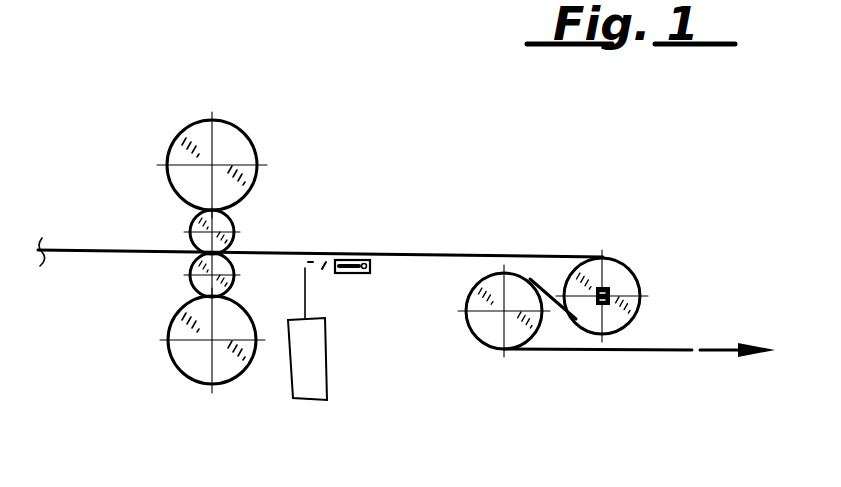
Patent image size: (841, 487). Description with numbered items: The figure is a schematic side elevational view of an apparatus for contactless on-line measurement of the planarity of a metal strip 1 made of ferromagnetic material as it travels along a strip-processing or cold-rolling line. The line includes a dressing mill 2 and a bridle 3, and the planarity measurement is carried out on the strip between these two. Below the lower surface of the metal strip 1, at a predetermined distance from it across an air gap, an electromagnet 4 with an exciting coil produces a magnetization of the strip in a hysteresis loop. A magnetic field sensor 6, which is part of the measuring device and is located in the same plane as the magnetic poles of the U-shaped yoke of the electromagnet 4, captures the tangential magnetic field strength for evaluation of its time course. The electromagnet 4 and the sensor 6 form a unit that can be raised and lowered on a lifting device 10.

The metal strip 1 is at (692, 343).
The dressing mill 2 is at (181, 116).
The bridle 3 is at (628, 250).
The electromagnet 4 is at (348, 275).
The magnetic field sensor 6 is at (371, 279).
The lifting device 10 is at (320, 398).